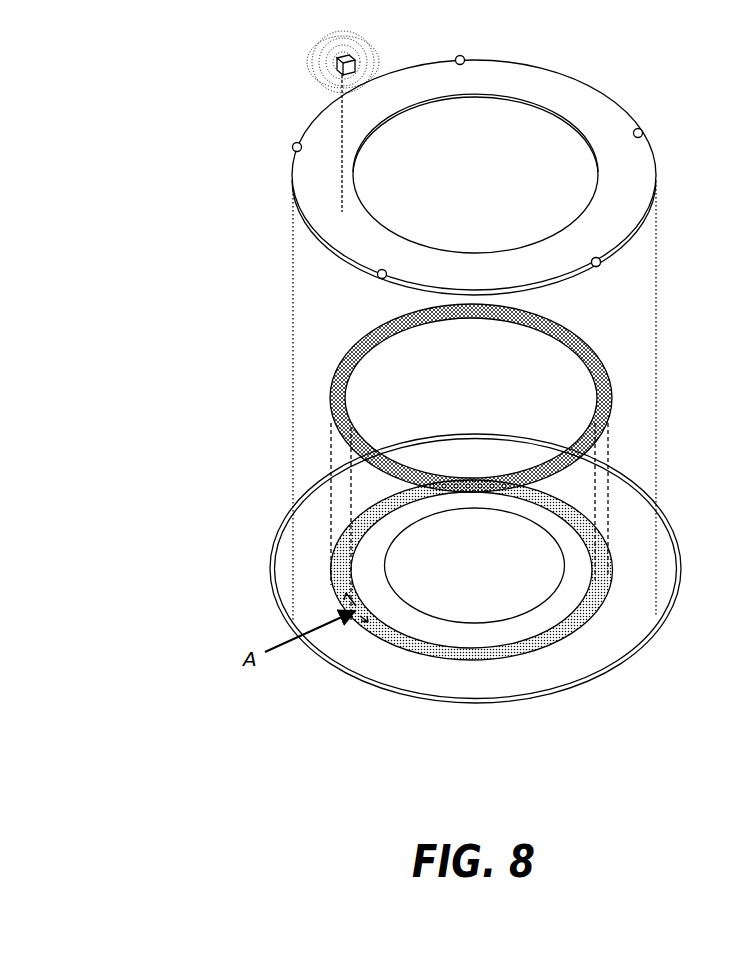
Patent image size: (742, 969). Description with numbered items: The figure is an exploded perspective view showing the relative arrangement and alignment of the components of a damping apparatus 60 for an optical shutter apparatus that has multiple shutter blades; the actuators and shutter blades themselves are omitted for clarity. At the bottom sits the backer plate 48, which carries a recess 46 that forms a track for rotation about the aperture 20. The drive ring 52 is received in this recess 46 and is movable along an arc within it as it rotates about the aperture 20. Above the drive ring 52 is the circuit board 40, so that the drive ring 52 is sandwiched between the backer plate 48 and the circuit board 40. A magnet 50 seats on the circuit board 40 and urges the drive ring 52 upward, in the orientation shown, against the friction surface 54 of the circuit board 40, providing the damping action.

The aperture 20 is at (485, 573).
The circuit board 40 is at (593, 102).
The recess 46 is at (597, 542).
The backer plate 48 is at (268, 542).
The magnet 50 is at (337, 77).
The drive ring 52 is at (603, 365).
The friction surface 54 is at (607, 255).
The damping apparatus 60 is at (163, 341).